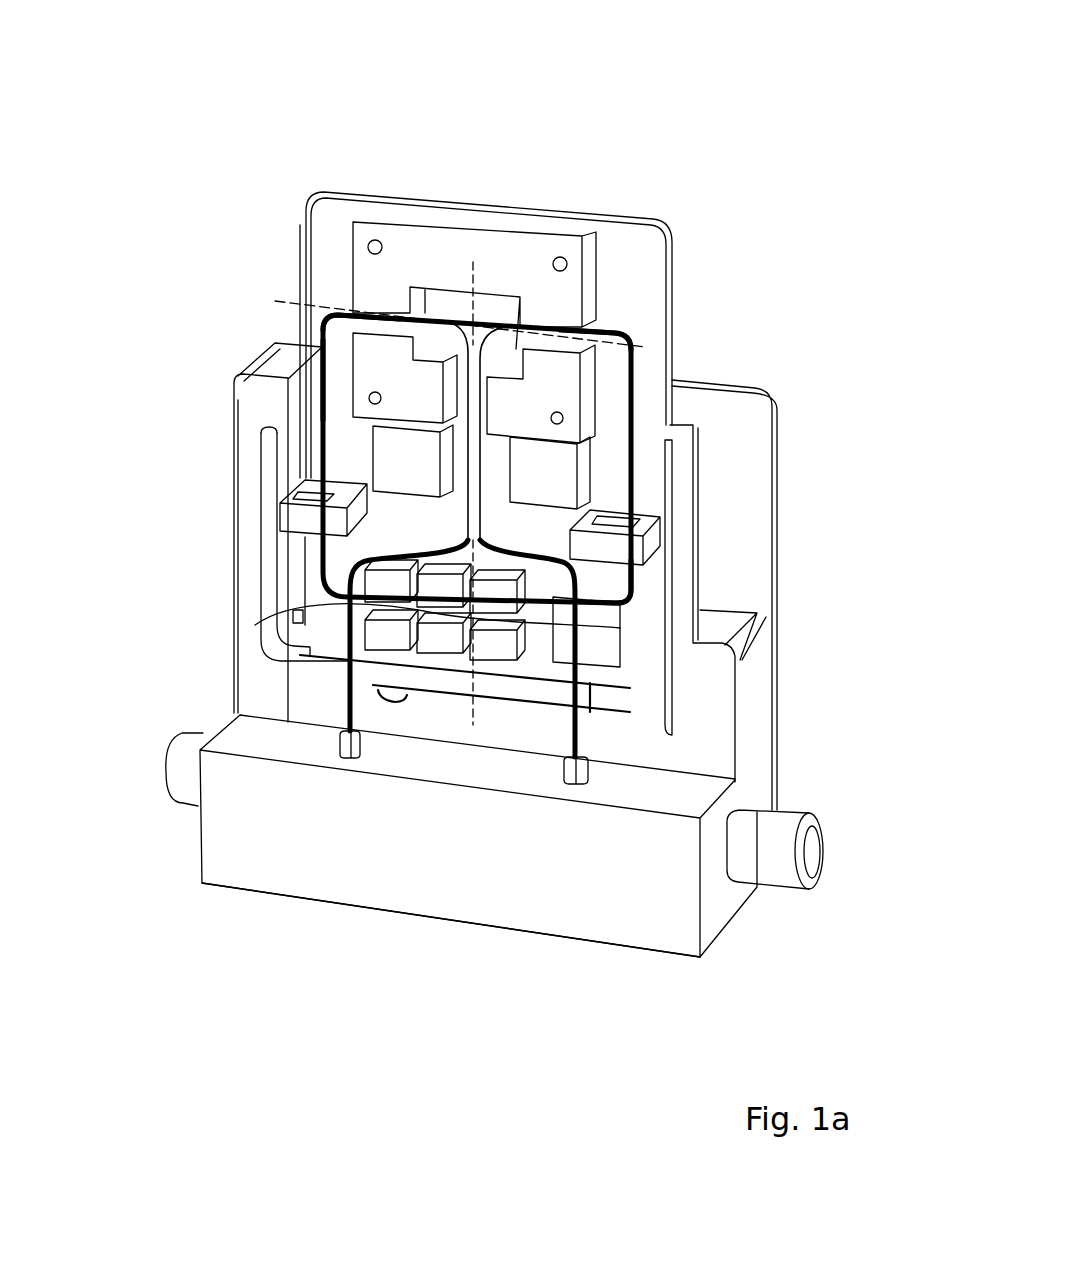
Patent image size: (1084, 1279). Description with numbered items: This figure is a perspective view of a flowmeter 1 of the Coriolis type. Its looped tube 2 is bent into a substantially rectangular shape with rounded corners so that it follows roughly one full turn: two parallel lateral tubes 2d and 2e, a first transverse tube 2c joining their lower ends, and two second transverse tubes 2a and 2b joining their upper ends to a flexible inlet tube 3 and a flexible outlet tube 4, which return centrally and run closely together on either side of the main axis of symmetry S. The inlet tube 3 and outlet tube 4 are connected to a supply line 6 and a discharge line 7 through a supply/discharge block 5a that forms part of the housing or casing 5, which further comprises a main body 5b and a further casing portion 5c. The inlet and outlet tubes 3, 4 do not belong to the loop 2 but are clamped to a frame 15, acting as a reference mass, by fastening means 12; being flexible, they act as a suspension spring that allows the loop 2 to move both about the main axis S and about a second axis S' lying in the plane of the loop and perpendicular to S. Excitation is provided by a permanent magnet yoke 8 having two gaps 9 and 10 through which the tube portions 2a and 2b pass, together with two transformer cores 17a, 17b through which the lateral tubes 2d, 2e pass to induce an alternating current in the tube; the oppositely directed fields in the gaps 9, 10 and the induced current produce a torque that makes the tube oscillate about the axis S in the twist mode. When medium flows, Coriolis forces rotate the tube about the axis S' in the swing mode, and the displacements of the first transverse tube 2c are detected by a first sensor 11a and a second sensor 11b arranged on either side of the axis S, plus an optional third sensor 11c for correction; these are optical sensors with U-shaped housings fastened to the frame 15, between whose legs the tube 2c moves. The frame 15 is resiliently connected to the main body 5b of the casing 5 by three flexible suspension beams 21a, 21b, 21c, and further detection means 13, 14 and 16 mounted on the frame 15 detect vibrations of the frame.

The flowmeter 1 is at (263, 1030).
The looped tube 2 is at (630, 390).
The second transverse tube 2a is at (322, 313).
The second transverse tube 2b is at (593, 342).
The first transverse tube 2c is at (275, 612).
The lateral tube 2d is at (630, 594).
The lateral tube 2e is at (337, 387).
The inlet tube 3 is at (467, 387).
The outlet tube 4 is at (480, 404).
The housing 5 is at (736, 942).
The supply/discharge block 5a is at (300, 863).
The main body 5b is at (245, 502).
The right housing pillar 5c is at (727, 408).
The supply line 6 is at (168, 770).
The discharge line 7 is at (787, 840).
The permanent magnet yoke 8 is at (520, 250).
The gap 9 is at (404, 264).
The gap 10 is at (534, 320).
The first sensor 11a is at (390, 637).
The second sensor 11b is at (433, 647).
The third sensor 11c is at (495, 650).
The fastening means 12 is at (632, 558).
The further detection means 13 is at (410, 474).
The further detection means 14 is at (548, 486).
The frame 15 is at (632, 252).
The further detection means 16 is at (605, 650).
The transformer core 17a is at (300, 515).
The transformer core 17b is at (627, 545).
The suspension element 21a is at (290, 458).
The suspension element 21b is at (687, 507).
The suspension element 21c is at (485, 690).
The main axis of symmetry S is at (460, 365).
The second axis S' is at (424, 317).